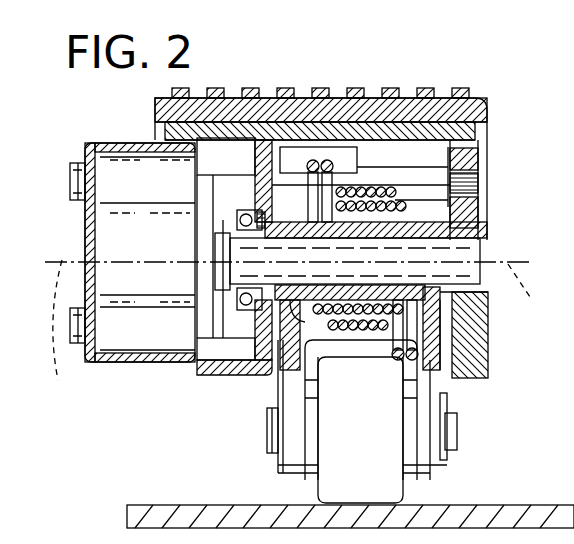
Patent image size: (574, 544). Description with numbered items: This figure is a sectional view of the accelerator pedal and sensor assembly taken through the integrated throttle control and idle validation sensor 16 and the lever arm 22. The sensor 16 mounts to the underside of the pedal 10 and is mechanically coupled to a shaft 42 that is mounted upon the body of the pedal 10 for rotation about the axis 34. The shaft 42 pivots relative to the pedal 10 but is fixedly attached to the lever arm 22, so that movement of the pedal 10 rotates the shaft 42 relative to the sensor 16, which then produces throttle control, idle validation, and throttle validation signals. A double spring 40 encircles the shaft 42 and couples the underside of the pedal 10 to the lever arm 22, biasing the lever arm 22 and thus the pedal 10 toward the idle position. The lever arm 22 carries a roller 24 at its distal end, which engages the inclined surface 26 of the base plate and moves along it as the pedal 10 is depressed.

The accelerator pedal 10 is at (470, 344).
The integrated throttle control and idle validation sensor 16 is at (137, 228).
The lever arm 22 is at (292, 368).
The roller 24 is at (378, 457).
The inclined surface 26 is at (192, 503).
The axis 34 is at (300, 335).
The double spring 40 is at (305, 200).
The shaft 42 is at (468, 254).